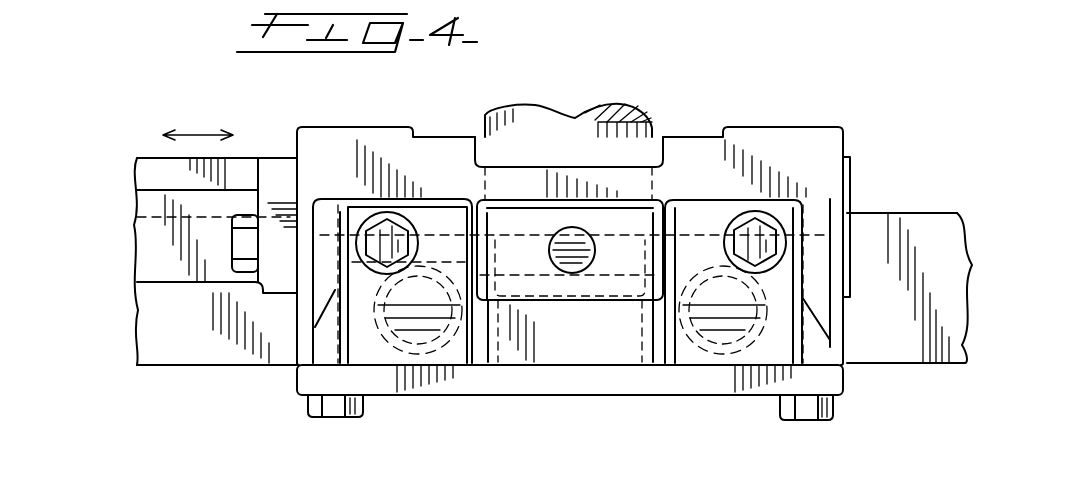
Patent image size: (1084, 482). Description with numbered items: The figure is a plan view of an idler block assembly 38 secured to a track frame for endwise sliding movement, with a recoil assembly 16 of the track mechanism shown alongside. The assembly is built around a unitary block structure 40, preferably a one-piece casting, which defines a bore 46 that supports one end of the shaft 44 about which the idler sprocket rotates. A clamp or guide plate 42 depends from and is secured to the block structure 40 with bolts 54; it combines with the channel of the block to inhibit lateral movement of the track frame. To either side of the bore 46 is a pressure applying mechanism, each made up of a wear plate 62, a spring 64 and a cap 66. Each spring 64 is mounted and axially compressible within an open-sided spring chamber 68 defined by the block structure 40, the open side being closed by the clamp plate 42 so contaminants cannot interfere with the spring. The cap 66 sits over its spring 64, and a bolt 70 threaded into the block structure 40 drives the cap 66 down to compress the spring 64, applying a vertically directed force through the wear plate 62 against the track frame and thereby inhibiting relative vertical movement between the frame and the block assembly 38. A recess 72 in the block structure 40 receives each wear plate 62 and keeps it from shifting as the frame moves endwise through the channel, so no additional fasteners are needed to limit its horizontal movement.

The recoil assembly 16 is at (268, 157).
The block assembly 38 is at (858, 142).
The unitary block structure 40 is at (795, 160).
The clamp plate 42 is at (505, 387).
The shaft 44 is at (547, 118).
The bore 46 is at (650, 158).
The bolts 54 is at (340, 418).
The wear plate 62 is at (663, 363).
The spring 64 is at (718, 357).
The cap 66 is at (690, 220).
The spring chamber 68 is at (687, 353).
The bolt 70 is at (760, 233).
The recess 72 is at (630, 303).